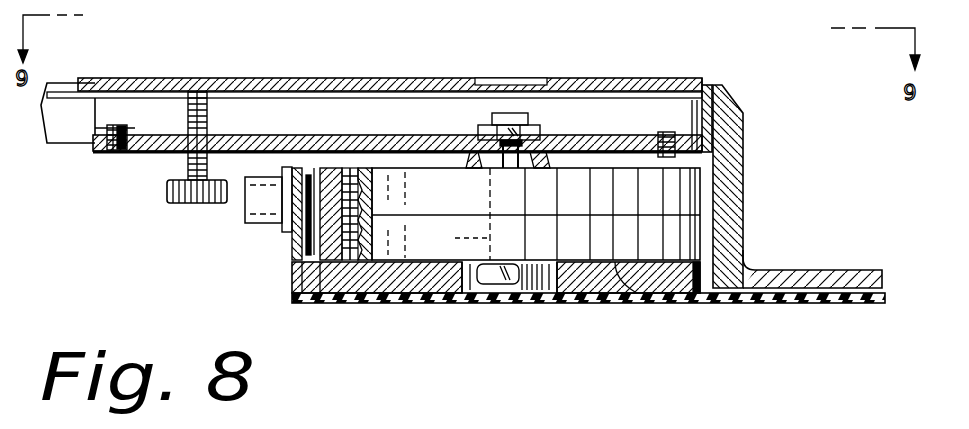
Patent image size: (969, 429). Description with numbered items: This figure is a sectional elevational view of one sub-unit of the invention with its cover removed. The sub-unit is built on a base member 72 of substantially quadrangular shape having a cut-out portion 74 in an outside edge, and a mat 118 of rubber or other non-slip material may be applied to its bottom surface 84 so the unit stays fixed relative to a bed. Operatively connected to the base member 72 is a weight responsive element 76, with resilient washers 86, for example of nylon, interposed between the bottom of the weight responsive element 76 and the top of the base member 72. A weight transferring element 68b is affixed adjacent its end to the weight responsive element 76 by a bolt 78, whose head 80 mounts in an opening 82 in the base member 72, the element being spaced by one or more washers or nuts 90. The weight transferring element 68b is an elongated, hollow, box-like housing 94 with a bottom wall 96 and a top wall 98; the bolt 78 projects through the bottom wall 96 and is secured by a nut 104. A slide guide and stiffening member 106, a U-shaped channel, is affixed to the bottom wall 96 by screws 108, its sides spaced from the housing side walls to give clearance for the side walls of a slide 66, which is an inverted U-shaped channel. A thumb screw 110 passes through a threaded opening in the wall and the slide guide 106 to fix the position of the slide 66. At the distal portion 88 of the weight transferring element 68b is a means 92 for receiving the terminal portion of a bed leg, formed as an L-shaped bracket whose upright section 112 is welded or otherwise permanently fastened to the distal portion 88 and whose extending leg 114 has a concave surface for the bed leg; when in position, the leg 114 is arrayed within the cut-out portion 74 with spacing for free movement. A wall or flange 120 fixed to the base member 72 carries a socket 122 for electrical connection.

The slide 66 is at (62, 132).
The weight transferring element 68b is at (563, 78).
The base member 72 is at (318, 298).
The cut-out portion 74 is at (710, 300).
The weight responsive element 76 is at (460, 203).
The bolt 78 is at (458, 238).
The head 80 is at (506, 292).
The opening 82 is at (465, 287).
The bottom surface 84 is at (430, 280).
The washers 86 is at (310, 276).
The distal portion 88 is at (690, 80).
The washers or nuts 90 is at (554, 164).
The means for receiving the terminal portion of the leg of a bed 92 is at (752, 128).
The housing 94 is at (412, 76).
The bottom wall 96 is at (156, 152).
The top wall 98 is at (288, 78).
The nut 104 is at (478, 130).
The slide guide and stiffening member 106 is at (118, 129).
The screws 108 is at (124, 146).
The thumb screw 110 is at (193, 204).
The upright section 112 is at (744, 222).
The extending leg 114 is at (828, 280).
The mat 118 is at (386, 302).
The wall or flange 120 is at (268, 262).
The socket 122 is at (262, 223).